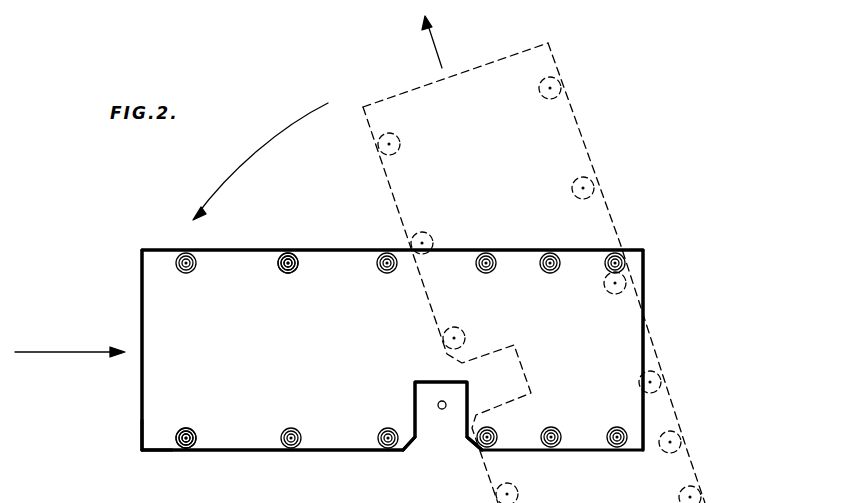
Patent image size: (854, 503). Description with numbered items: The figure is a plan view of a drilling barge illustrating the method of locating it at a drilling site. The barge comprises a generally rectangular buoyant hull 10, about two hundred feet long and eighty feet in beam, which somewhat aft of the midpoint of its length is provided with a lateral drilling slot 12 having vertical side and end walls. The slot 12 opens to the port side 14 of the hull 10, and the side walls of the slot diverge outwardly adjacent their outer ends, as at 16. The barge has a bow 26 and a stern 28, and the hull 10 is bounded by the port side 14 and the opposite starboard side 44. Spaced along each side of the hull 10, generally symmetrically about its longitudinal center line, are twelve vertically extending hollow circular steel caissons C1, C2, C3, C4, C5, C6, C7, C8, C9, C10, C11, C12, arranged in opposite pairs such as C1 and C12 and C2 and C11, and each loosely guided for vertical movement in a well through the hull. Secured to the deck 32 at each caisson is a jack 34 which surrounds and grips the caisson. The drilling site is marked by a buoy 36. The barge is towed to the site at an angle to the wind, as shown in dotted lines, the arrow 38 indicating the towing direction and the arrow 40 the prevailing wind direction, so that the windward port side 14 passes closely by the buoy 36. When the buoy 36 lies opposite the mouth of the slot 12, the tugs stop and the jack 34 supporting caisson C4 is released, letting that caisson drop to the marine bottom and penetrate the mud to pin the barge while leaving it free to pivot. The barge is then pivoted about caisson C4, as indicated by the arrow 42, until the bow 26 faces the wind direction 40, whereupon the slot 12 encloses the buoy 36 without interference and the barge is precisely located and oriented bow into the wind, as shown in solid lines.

The buoyant hull 10 is at (238, 456).
The lateral drilling slot 12 is at (507, 375).
The port side 14 is at (333, 450).
The diverging slot side walls 16 is at (412, 443).
The bow 26 is at (142, 323).
The stern 28 is at (643, 285).
The deck 32 is at (150, 406).
The jack 34 is at (294, 270).
The buoy 36 is at (442, 409).
The towing direction arrow 38 is at (437, 51).
The prevailing wind direction arrow 40 is at (72, 357).
The pivoting arrow 42 is at (233, 176).
The starboard side 44 is at (263, 252).
The caisson C1 is at (198, 432).
The caisson C2 is at (297, 430).
The caisson C3 is at (397, 432).
The caisson C4 is at (494, 432).
The caisson C5 is at (552, 427).
The caisson C6 is at (614, 427).
The caisson C7 is at (618, 255).
The caisson C8 is at (551, 254).
The caisson C9 is at (487, 254).
The caisson C10 is at (393, 242).
The caisson C11 is at (292, 257).
The caisson C12 is at (190, 257).